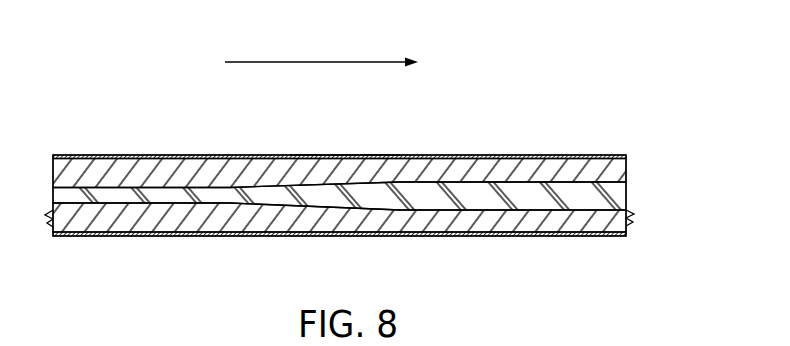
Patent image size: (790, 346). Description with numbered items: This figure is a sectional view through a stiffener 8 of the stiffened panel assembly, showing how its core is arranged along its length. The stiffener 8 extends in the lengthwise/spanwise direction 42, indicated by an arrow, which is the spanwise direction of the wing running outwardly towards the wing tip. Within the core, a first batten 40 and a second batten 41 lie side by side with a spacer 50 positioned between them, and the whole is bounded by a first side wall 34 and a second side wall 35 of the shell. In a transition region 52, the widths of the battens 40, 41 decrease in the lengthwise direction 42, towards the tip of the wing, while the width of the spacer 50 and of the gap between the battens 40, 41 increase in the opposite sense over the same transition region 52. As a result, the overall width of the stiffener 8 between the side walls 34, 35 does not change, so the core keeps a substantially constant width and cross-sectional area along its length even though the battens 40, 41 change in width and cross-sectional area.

The stiffener 8 is at (528, 133).
The first side wall 34 is at (512, 236).
The second side wall 35 is at (265, 153).
The first batten 40 is at (122, 225).
The second batten 41 is at (166, 165).
The lengthwise/spanwise direction 42 is at (270, 62).
The spacer 50 is at (443, 190).
The transition region 52 is at (338, 134).